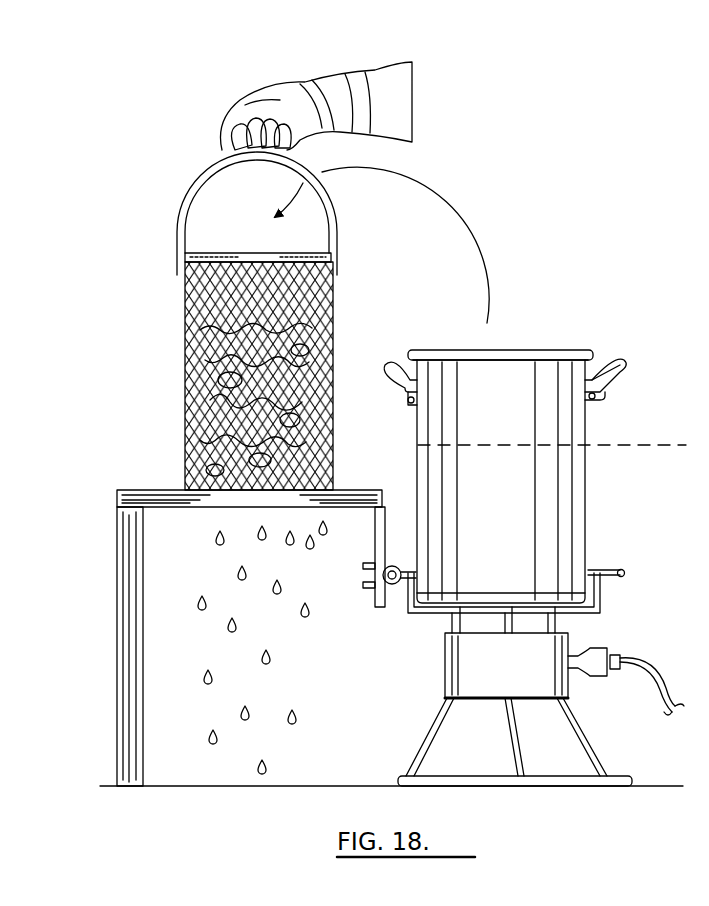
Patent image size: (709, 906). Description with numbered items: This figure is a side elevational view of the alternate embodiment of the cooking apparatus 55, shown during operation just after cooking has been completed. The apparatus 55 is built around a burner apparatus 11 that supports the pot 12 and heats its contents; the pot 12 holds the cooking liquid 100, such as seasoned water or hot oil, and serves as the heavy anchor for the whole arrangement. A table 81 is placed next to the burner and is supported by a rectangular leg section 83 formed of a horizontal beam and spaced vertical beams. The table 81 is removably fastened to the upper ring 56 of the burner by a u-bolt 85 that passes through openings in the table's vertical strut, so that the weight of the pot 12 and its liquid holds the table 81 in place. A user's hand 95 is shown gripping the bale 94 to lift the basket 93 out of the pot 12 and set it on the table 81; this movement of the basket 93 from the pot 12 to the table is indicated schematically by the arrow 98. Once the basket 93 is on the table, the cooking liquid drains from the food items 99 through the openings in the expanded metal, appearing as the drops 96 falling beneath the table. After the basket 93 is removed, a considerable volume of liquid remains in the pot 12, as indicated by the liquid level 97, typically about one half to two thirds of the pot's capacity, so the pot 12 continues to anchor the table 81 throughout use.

The burner apparatus 11 is at (445, 665).
The pot 12 is at (505, 536).
The apparatus 55 is at (520, 182).
The upper ring 56 is at (624, 574).
The table 81 is at (117, 490).
The leg section 83 is at (125, 655).
The u-bolt 85 is at (392, 590).
The basket 93 is at (185, 300).
The bale 94 is at (177, 195).
The user's hand 95 is at (345, 85).
The oil droplets 96 is at (214, 544).
The liquid level 97 is at (630, 435).
The basket moving action 98 is at (457, 202).
The drops 99 is at (330, 318).
The cooking liquid 100 is at (465, 488).